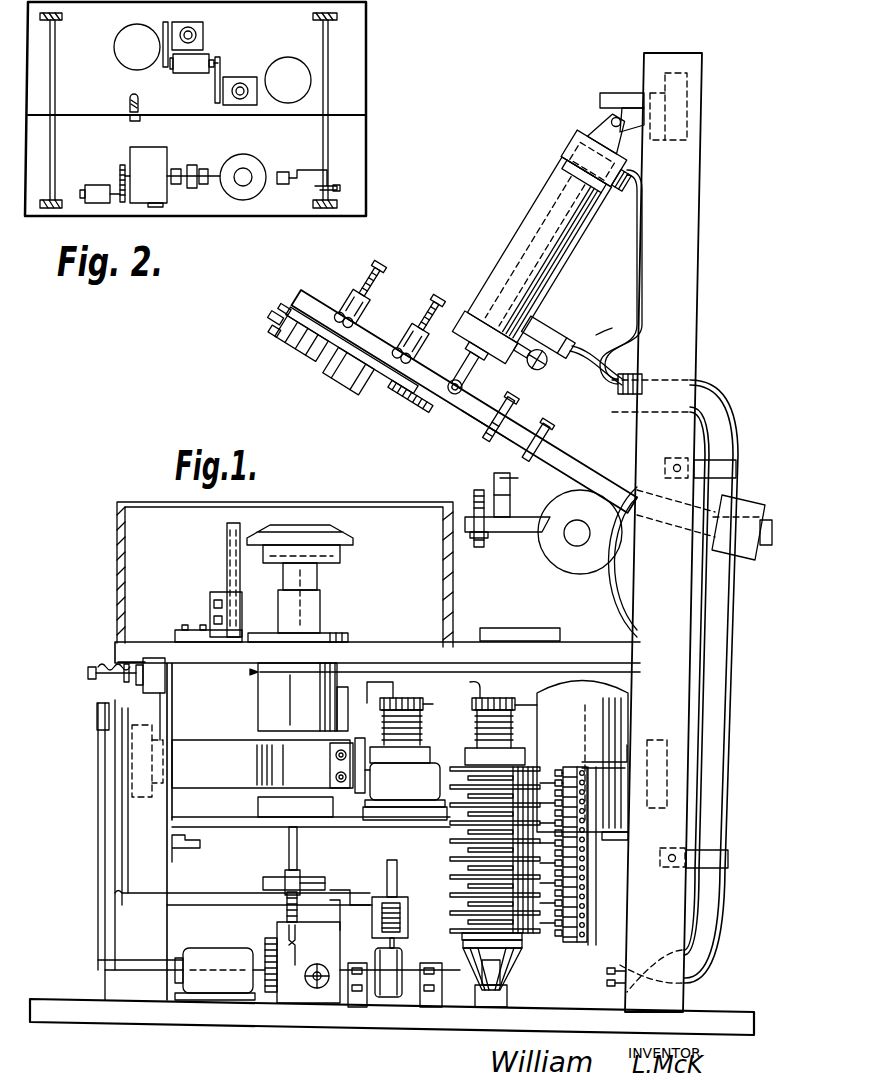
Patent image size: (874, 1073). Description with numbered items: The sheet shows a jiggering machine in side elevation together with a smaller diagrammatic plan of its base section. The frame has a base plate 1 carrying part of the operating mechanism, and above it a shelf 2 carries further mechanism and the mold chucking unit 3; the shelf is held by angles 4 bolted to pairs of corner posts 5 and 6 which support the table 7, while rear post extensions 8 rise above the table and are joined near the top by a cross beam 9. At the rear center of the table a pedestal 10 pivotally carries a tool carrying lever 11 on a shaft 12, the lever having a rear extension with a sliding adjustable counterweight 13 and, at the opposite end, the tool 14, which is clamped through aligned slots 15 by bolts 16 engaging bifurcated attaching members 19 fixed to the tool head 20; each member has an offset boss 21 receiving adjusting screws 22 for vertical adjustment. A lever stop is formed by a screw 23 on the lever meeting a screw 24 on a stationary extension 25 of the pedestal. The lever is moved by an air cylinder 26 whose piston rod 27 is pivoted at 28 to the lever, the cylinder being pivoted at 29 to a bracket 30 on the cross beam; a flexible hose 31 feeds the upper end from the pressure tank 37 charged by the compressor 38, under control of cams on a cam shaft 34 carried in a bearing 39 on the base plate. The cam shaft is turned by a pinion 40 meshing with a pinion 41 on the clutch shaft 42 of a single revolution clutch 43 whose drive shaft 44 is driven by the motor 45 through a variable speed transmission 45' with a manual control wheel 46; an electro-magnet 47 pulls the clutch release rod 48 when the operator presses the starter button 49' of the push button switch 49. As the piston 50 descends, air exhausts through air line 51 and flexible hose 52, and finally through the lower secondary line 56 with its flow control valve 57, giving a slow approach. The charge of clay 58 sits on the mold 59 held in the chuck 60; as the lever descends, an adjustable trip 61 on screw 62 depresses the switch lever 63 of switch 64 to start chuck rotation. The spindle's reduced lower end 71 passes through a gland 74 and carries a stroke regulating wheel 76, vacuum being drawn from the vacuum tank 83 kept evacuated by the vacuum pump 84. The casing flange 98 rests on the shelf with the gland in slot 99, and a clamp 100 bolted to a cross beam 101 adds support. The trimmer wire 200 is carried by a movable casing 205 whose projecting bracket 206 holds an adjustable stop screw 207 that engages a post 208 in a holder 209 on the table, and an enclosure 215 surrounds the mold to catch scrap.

In FIG. 2, the base plate 1 is at (270, 220).
In FIG. 2, the shelf 2 is at (197, 94).
In FIG. 1, the shelf 2 is at (85, 705).
In FIG. 1, the mold chucking unit 3 is at (250, 672).
In FIG. 1, the angles 4 is at (175, 855).
In FIG. 1, the front corner posts 5 is at (120, 933).
In FIG. 1, the rear corner posts 6 is at (718, 690).
In FIG. 1, the table 7 is at (355, 655).
In FIG. 1, the rear post extensions 8 is at (695, 362).
In FIG. 1, the cross beam 9 is at (688, 108).
In FIG. 1, the pedestal 10 is at (545, 632).
In FIG. 1, the tool carrying lever 11 is at (590, 472).
In FIG. 1, the shaft 12 is at (568, 540).
In FIG. 1, the adjustable counterweight 13 is at (735, 496).
In FIG. 1, the tool 14 is at (380, 372).
In FIG. 1, the slots 15 is at (334, 315).
In FIG. 1, the bolts 16 is at (336, 312).
In FIG. 1, the bifurcated attaching members 19 is at (303, 321).
In FIG. 1, the tool head 20 is at (352, 380).
In FIG. 1, the offset boss 21 is at (350, 290).
In FIG. 1, the adjusting screws 22 is at (379, 262).
In FIG. 1, the screw 23 is at (465, 418).
In FIG. 1, the screw 24 is at (480, 546).
In FIG. 1, the stationary extension 25 is at (520, 520).
In FIG. 1, the air cylinder 26 is at (526, 217).
In FIG. 1, the piston rod 27 is at (470, 372).
In FIG. 1, the pivot connection 28 is at (455, 395).
In FIG. 1, the pivot connection 29 is at (611, 120).
In FIG. 1, the bracket 30 is at (633, 92).
In FIG. 1, the flexible hose 31 is at (632, 252).
In FIG. 1, the cam shaft 34 is at (540, 965).
In FIG. 2, the pressure tank 37 is at (298, 58).
In FIG. 1, the pressure tank 37 is at (545, 700).
In FIG. 2, the compressor 38 is at (226, 75).
In FIG. 1, the compressor 38 is at (475, 703).
In FIG. 1, the bearing 39 is at (508, 992).
In FIG. 1, the pinion 40 is at (512, 950).
In FIG. 1, the pinion 41 is at (478, 995).
In FIG. 1, the clutch shaft 42 is at (428, 1008).
In FIG. 2, the single revolution clutch 43 is at (190, 188).
In FIG. 1, the single revolution clutch 43 is at (382, 998).
In FIG. 1, the drive shaft 44 is at (350, 962).
In FIG. 2, the motor 45 is at (93, 177).
In FIG. 1, the motor 45 is at (226, 964).
In FIG. 2, the variable speed transmission 45' is at (167, 163).
In FIG. 1, the variable speed transmission 45' is at (281, 974).
In FIG. 1, the manual control wheel 46 is at (316, 990).
In FIG. 1, the electro-magnet 47 is at (400, 918).
In FIG. 1, the clutch release rod 48 is at (396, 944).
In FIG. 1, the push button switch 49 is at (96, 781).
In FIG. 1, the starter button 49' is at (81, 666).
In FIG. 1, the piston 50 is at (563, 152).
In FIG. 1, the air line 51 is at (542, 323).
In FIG. 1, the flexible hose 52 is at (588, 352).
In FIG. 1, the lower secondary line 56 is at (544, 362).
In FIG. 1, the flow control valve 57 is at (526, 372).
In FIG. 1, the charge of clay 58 is at (330, 527).
In FIG. 1, the mold 59 is at (343, 550).
In FIG. 1, the chuck 60 is at (322, 572).
In FIG. 1, the adjustable trip 61 is at (498, 432).
In FIG. 1, the screw 62 is at (616, 388).
In FIG. 1, the switch lever 63 is at (537, 452).
In FIG. 1, the switch 64 is at (494, 476).
In FIG. 2, the reduced lower end 71 is at (140, 96).
In FIG. 1, the gland 74 is at (288, 842).
In FIG. 1, the stroke regulating wheel 76 is at (299, 880).
In FIG. 2, the vacuum tank 83 is at (114, 50).
In FIG. 1, the vacuum tank 83 is at (257, 710).
In FIG. 2, the vacuum pump 84 is at (203, 28).
In FIG. 1, the vacuum pump 84 is at (398, 697).
In FIG. 1, the flange 98 is at (258, 810).
In FIG. 2, the slot 99 is at (134, 123).
In FIG. 1, the clamp 100 is at (197, 780).
In FIG. 1, the cross beam 101 is at (132, 790).
In FIG. 1, the trimmer wire 200 is at (275, 335).
In FIG. 1, the movable casing 205 is at (300, 342).
In FIG. 1, the projecting bracket 206 is at (283, 311).
In FIG. 1, the adjustable stop screw 207 is at (276, 320).
In FIG. 1, the post 208 is at (227, 550).
In FIG. 1, the holder 209 is at (210, 596).
In FIG. 1, the enclosure 215 is at (126, 512).